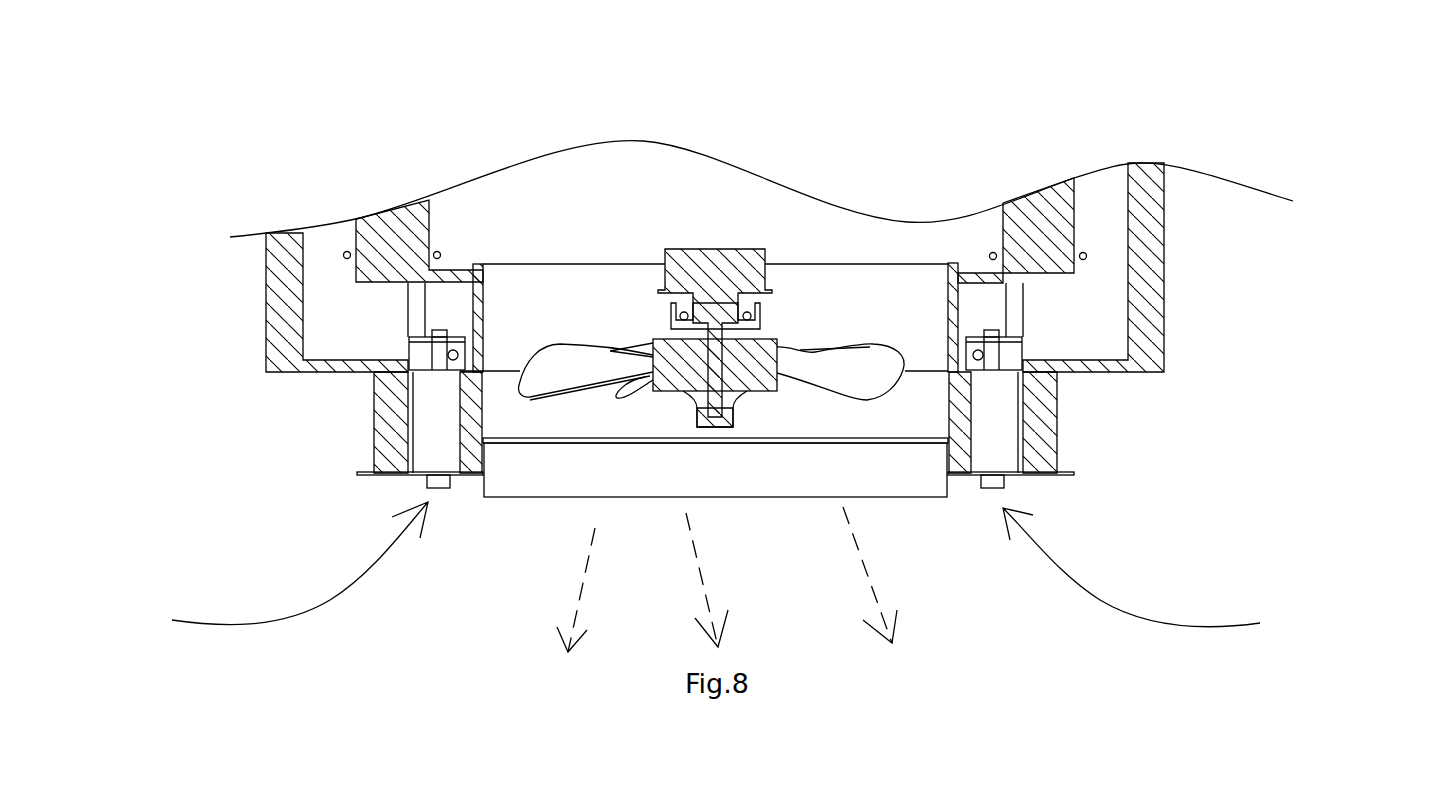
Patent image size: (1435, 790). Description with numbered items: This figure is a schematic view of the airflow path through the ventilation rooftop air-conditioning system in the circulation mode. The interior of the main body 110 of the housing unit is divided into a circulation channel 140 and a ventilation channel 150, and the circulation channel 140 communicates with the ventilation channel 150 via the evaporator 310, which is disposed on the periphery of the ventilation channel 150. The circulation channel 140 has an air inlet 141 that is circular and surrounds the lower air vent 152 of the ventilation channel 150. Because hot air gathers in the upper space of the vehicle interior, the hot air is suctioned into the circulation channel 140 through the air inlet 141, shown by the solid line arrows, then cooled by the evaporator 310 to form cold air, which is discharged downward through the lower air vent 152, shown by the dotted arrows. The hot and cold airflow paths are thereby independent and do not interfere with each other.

The main body 110 is at (1172, 278).
The circulation channel 140 is at (318, 330).
The air inlet 141 is at (433, 468).
The ventilation channel 150 is at (740, 172).
The lower air vent 152 is at (573, 488).
The evaporator 310 is at (375, 224).